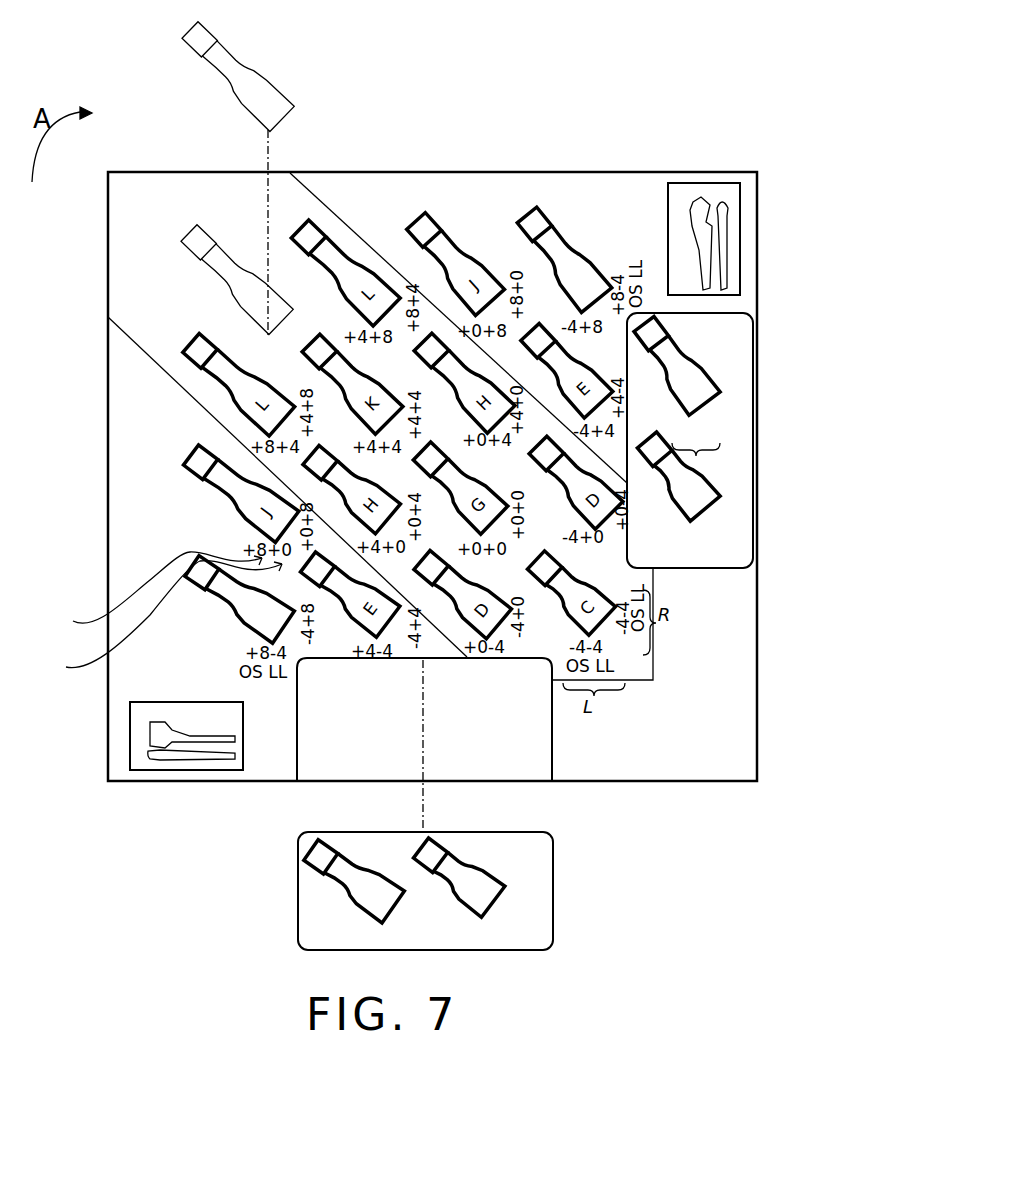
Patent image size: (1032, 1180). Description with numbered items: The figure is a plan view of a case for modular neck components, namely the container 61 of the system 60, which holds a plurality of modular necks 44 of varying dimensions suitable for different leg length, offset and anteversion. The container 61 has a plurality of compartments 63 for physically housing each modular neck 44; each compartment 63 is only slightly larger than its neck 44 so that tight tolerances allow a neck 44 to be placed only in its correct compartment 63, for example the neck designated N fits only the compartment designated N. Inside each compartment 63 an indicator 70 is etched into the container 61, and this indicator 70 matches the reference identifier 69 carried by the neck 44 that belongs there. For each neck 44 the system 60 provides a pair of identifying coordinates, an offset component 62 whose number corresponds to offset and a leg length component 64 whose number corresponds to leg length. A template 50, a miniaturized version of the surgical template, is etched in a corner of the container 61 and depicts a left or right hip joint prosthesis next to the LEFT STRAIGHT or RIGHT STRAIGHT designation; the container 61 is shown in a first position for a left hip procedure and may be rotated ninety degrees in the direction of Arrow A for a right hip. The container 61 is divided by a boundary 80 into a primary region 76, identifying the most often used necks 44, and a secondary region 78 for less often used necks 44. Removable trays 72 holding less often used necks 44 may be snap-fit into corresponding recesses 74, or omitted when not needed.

The modular neck 44 is at (233, 60).
The template 50 is at (730, 190).
The system 60 is at (687, 98).
The container 61 is at (640, 182).
The offset component 62 is at (251, 704).
The compartment 63 is at (200, 240).
The leg length component 64 is at (277, 730).
The reference identifier 69 is at (252, 626).
The indicator 70 is at (262, 270).
The removable tray 72 is at (752, 552).
The recess 74 is at (545, 765).
The primary region 76 is at (143, 280).
The secondary region 78 is at (120, 357).
The boundary 80 is at (123, 330).